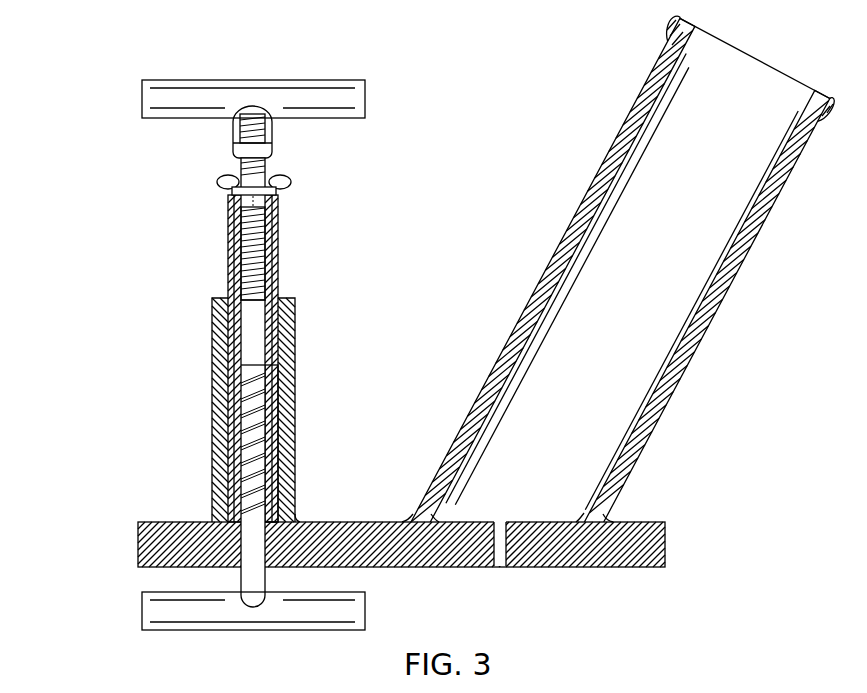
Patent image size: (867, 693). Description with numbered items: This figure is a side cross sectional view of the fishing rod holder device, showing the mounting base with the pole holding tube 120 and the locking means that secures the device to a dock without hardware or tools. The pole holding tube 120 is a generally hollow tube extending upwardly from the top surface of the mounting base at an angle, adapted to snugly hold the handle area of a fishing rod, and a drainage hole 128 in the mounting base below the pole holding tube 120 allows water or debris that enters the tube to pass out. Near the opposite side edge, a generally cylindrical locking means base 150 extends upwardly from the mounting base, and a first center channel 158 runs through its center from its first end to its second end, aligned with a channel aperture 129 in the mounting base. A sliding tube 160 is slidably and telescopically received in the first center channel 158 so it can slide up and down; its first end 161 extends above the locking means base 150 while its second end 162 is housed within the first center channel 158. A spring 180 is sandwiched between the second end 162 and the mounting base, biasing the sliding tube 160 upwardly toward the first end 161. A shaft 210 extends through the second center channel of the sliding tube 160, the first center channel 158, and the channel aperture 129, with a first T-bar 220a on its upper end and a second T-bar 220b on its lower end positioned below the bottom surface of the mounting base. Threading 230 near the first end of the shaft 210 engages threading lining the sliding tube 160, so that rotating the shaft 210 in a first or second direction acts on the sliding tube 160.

The pole holding tube 120 is at (562, 250).
The drainage hole 128 is at (503, 568).
The channel aperture 129 is at (297, 521).
The locking means base 150 is at (214, 329).
The first center channel 158 is at (279, 410).
The sliding tube 160 is at (232, 234).
The first end of the sliding tube 161 is at (232, 193).
The second end of the sliding tube 162 is at (296, 337).
The spring 180 is at (232, 382).
The shaft 210 is at (242, 165).
The first T-bar 220a is at (286, 88).
The second T-bar 220b is at (142, 622).
The threading 230 is at (270, 239).